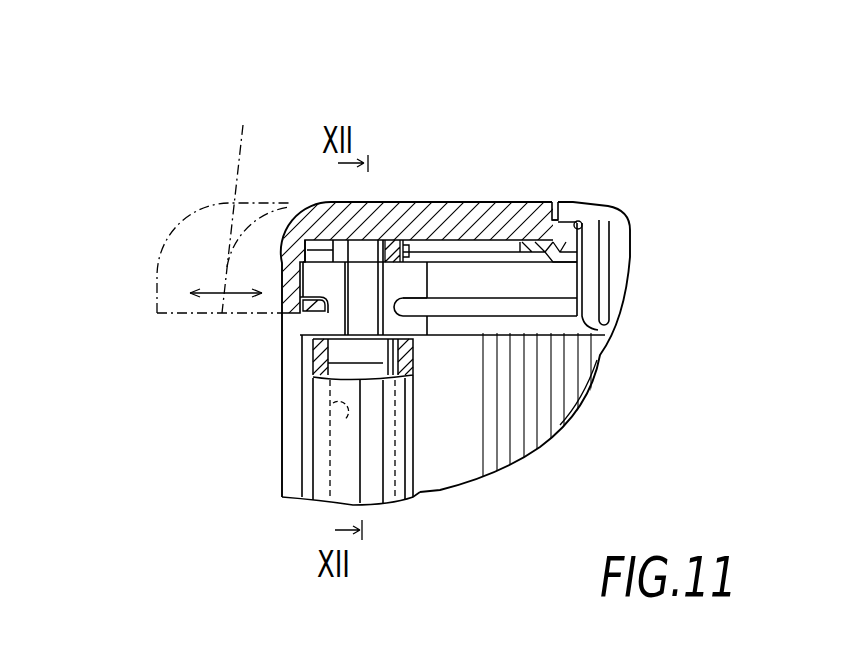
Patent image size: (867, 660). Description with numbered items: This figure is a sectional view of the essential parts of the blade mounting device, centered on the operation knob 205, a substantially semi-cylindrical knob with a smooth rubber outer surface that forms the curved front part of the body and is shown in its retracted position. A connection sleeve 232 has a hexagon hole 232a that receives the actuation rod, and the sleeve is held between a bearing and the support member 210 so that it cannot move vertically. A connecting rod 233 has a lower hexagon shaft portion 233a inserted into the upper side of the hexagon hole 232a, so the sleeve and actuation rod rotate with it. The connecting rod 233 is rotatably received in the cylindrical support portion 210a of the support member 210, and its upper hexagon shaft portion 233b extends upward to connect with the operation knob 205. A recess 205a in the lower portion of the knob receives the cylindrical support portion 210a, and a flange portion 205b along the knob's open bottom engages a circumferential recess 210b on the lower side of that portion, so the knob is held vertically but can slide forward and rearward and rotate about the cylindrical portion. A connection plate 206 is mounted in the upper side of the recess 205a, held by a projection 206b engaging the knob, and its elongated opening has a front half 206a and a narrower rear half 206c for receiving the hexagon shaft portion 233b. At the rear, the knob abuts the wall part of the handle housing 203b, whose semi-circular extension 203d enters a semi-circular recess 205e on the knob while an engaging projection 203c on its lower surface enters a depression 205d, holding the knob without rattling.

The wall part of the handle housing 203b is at (617, 203).
The engaging projection 203c is at (611, 232).
The semi-circular extension 203d is at (572, 213).
The operation knob 205 is at (290, 222).
The recess 205a is at (483, 280).
The flange portion 205b is at (317, 297).
The depression 205d is at (583, 218).
The semi-circular recess 205e is at (556, 205).
The connection plate 206 is at (442, 242).
The front half 206a is at (415, 242).
The projection 206b is at (524, 243).
The rear half 206c is at (460, 243).
The support member 210 is at (490, 325).
The cylindrical support portion 210a is at (447, 298).
The circumferential recess 210b is at (428, 285).
The connection sleeve 232 is at (347, 470).
The hexagon hole 232a is at (330, 427).
The connecting rod 233 is at (360, 302).
The hexagon shaft portion 233a is at (313, 347).
The hexagon shaft portion 233b is at (306, 240).